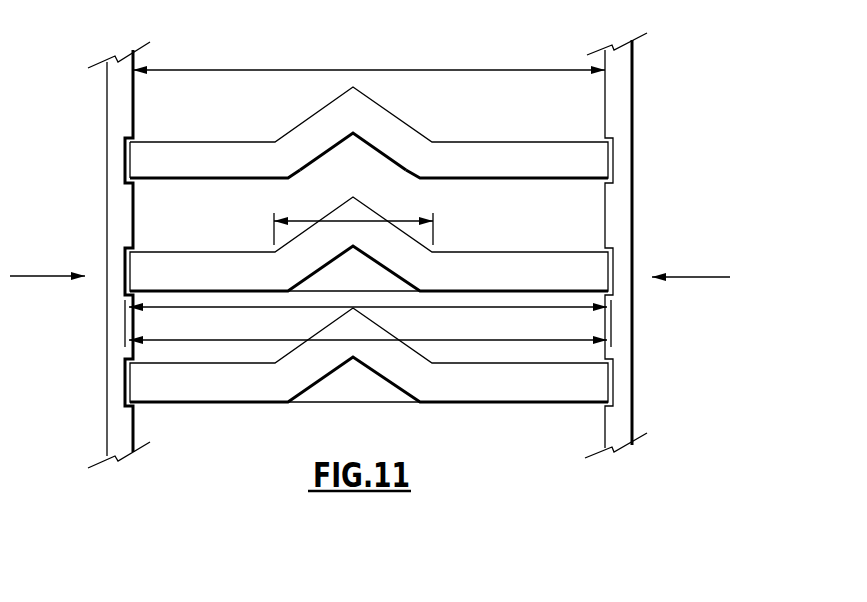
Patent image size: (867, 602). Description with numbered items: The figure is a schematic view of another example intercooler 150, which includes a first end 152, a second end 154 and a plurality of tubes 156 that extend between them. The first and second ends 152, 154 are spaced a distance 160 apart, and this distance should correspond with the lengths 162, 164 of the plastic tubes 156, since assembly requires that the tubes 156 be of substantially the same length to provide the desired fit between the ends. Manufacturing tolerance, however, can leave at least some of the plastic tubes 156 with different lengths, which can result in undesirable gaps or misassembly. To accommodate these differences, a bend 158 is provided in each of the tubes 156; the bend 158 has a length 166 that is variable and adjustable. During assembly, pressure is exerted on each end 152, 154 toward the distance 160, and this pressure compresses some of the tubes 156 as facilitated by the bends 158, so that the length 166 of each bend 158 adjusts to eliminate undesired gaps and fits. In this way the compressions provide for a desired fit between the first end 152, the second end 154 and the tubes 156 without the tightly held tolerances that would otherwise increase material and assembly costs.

The intercooler 150 is at (700, 118).
The first end 152 is at (622, 105).
The second end 154 is at (113, 118).
The tubes 156 is at (208, 168).
The bend 158 is at (353, 147).
The distance 160 is at (387, 70).
The length 162 is at (473, 340).
The length 164 is at (397, 307).
The length of the bend 166 is at (404, 222).